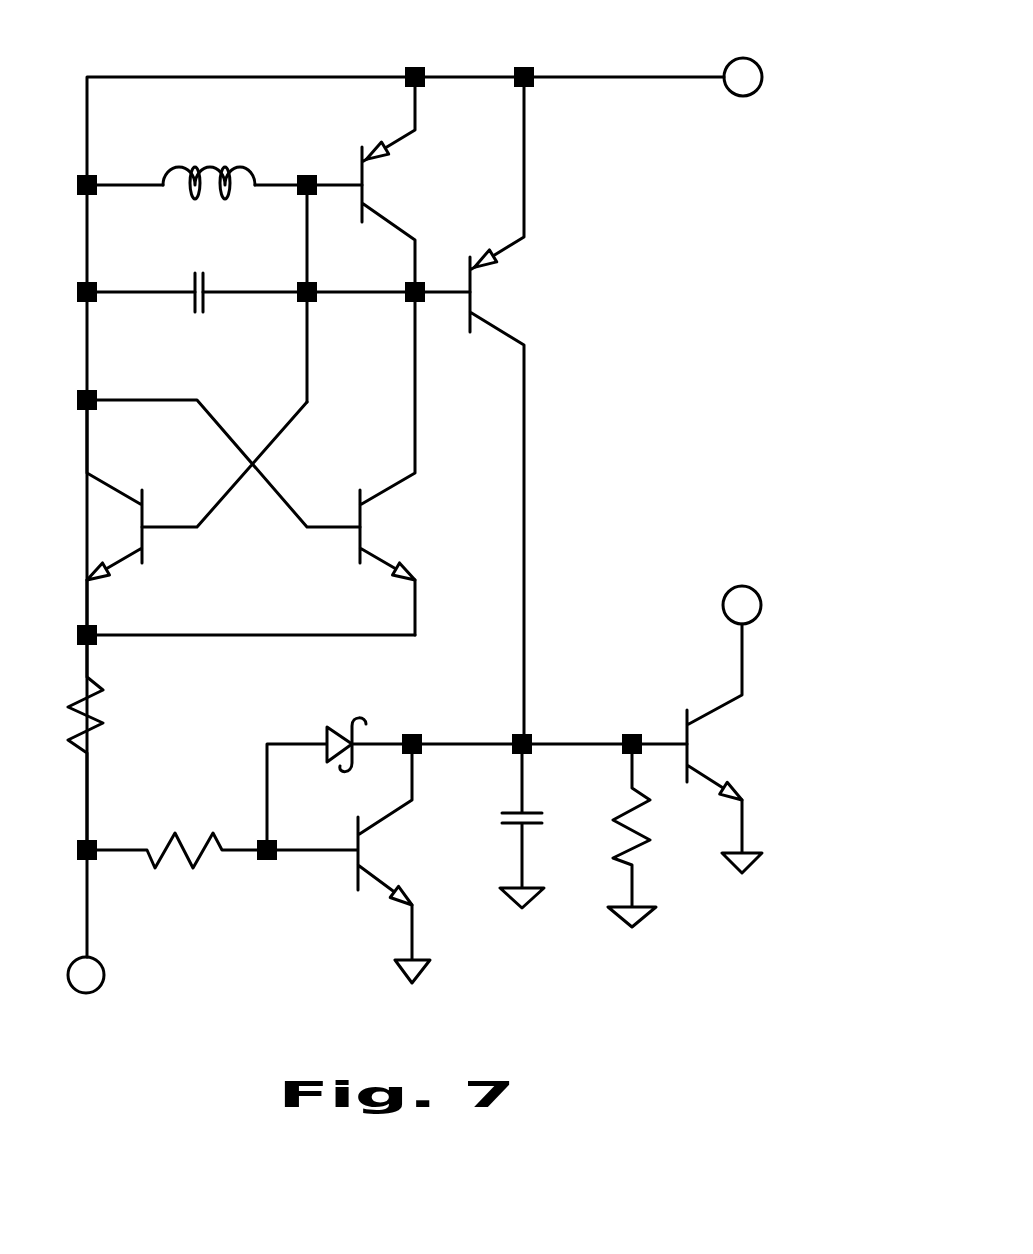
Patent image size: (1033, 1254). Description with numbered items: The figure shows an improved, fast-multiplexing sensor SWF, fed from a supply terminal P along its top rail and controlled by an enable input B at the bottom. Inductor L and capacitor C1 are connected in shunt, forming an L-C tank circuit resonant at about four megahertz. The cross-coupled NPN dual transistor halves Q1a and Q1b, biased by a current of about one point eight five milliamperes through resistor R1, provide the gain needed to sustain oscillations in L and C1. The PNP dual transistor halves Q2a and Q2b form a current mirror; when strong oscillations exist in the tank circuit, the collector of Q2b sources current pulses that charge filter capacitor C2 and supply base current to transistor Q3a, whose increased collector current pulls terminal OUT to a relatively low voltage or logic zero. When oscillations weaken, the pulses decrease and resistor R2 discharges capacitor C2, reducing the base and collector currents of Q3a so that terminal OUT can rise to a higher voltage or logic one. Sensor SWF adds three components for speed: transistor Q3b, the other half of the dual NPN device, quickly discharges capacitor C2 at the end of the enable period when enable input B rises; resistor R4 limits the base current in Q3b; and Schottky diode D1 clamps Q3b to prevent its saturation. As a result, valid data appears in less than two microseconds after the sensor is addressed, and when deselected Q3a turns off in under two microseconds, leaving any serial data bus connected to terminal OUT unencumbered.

The terminal P is at (735, 58).
The sensor SWF is at (722, 227).
The inductor L is at (210, 167).
The capacitor C1 is at (194, 282).
The PNP dual transistor Q2a is at (372, 207).
The PNP dual transistor Q2b is at (490, 318).
The cross-coupled NPN dual transistor Q1a is at (137, 520).
The cross-coupled NPN dual transistor Q1b is at (365, 535).
The resistor R1 is at (97, 720).
The resistor R4 is at (175, 835).
The Schottky diode D1 is at (330, 735).
The transistor Q3b is at (368, 863).
The filter capacitor C2 is at (515, 810).
The resistor R2 is at (625, 815).
The transistor Q3a is at (700, 720).
The terminal OUT is at (730, 595).
The enable input B is at (79, 993).